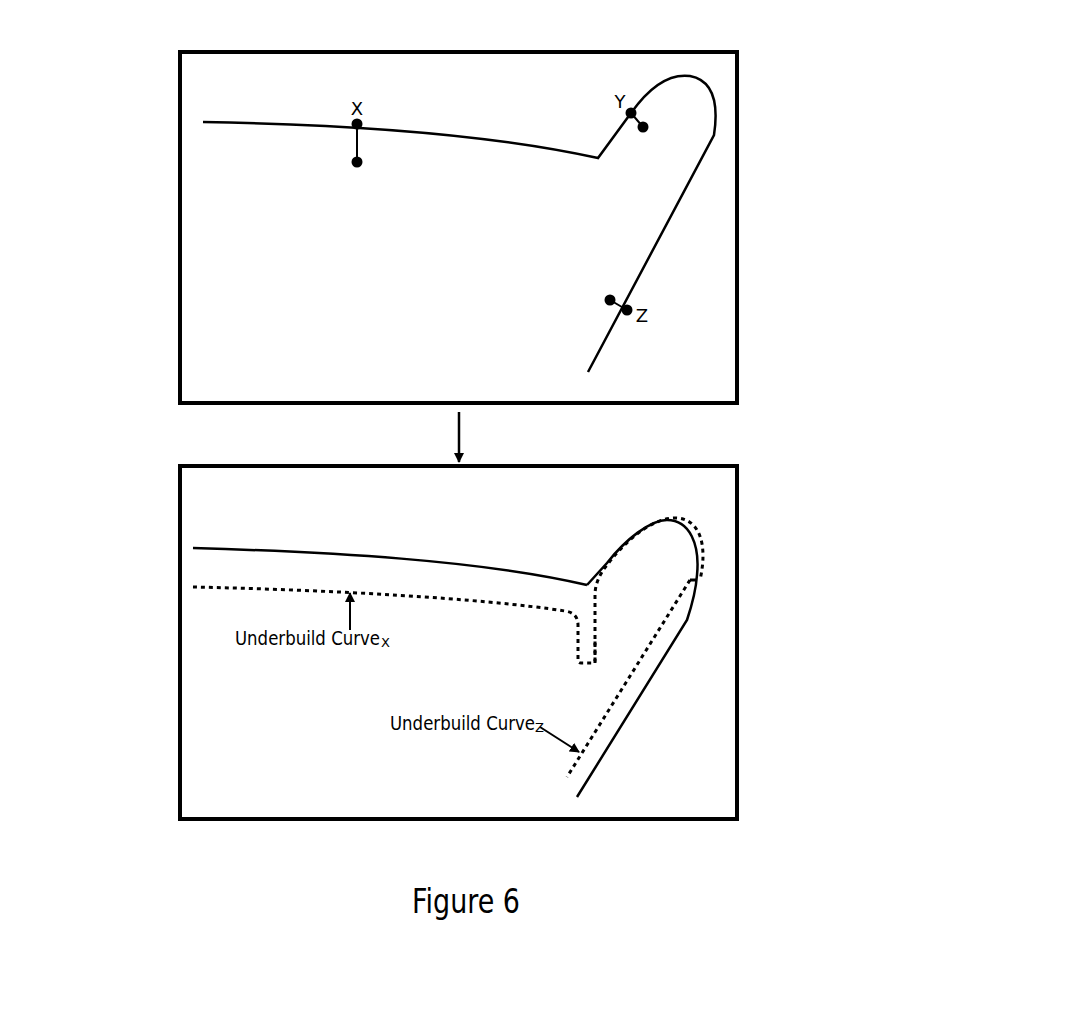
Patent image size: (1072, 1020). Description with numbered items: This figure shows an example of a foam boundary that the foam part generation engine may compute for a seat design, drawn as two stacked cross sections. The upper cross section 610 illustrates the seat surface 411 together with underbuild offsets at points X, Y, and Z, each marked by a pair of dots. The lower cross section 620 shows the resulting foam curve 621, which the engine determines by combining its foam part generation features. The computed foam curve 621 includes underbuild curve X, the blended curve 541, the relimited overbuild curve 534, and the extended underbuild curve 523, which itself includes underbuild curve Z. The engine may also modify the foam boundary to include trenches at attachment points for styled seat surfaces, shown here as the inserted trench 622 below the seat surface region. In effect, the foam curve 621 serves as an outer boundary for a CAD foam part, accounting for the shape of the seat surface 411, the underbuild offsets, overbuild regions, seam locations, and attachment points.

The cross section 610 is at (216, 52).
The seat surface 411 is at (472, 131).
The cross section 620 is at (216, 466).
The foam curve 621 is at (332, 587).
The blended curve 541 is at (601, 561).
The relimited overbuild curve 534 is at (676, 516).
The inserted trench 622 is at (574, 652).
The extended underbuild curve 523 is at (696, 582).